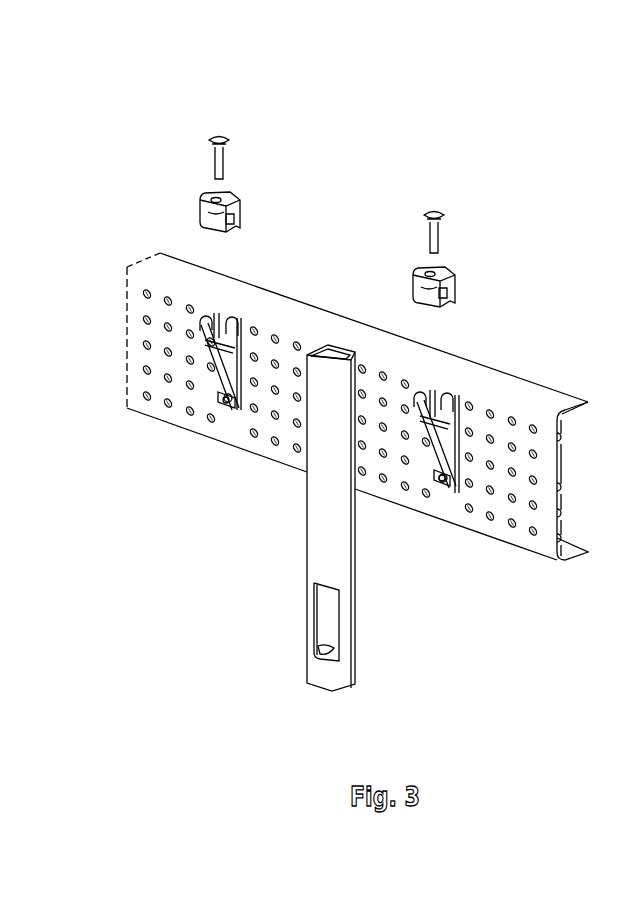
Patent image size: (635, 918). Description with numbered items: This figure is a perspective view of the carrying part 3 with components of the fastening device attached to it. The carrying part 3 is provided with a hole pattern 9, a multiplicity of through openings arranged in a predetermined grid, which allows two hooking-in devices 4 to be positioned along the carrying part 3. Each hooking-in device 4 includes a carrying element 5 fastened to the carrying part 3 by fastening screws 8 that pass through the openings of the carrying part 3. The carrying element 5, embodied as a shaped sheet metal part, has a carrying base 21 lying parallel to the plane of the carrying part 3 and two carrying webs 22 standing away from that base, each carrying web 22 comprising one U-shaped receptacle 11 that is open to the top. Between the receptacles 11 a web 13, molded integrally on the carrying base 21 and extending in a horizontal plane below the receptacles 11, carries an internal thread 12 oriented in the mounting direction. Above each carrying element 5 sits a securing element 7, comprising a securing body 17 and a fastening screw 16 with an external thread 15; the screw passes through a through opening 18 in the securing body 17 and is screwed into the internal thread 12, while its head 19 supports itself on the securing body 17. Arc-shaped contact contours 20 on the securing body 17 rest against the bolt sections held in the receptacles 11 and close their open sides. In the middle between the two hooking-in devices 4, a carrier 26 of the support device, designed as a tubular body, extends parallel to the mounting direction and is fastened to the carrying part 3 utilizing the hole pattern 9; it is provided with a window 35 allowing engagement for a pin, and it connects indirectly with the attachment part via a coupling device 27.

The carrying part 3 is at (548, 562).
The hooking-in device 4 is at (180, 283).
The carrying element 5 is at (212, 334).
The securing element 7 is at (242, 228).
The fastening screws 8 is at (207, 403).
The hole pattern 9 is at (537, 535).
The U-shaped receptacles 11 is at (201, 318).
The internal thread 12 is at (214, 330).
The web 13 is at (222, 352).
The external thread 15 is at (215, 150).
The fastening screw 16 is at (227, 158).
The securing body 17 is at (242, 203).
The through opening 18 is at (217, 200).
The head 19 is at (220, 135).
The contact contour 20 is at (232, 221).
The carrying base 21 is at (220, 388).
The carrying webs 22 is at (238, 370).
The carrier 26 is at (320, 538).
The coupling device 27 is at (316, 648).
The window 35 is at (315, 607).